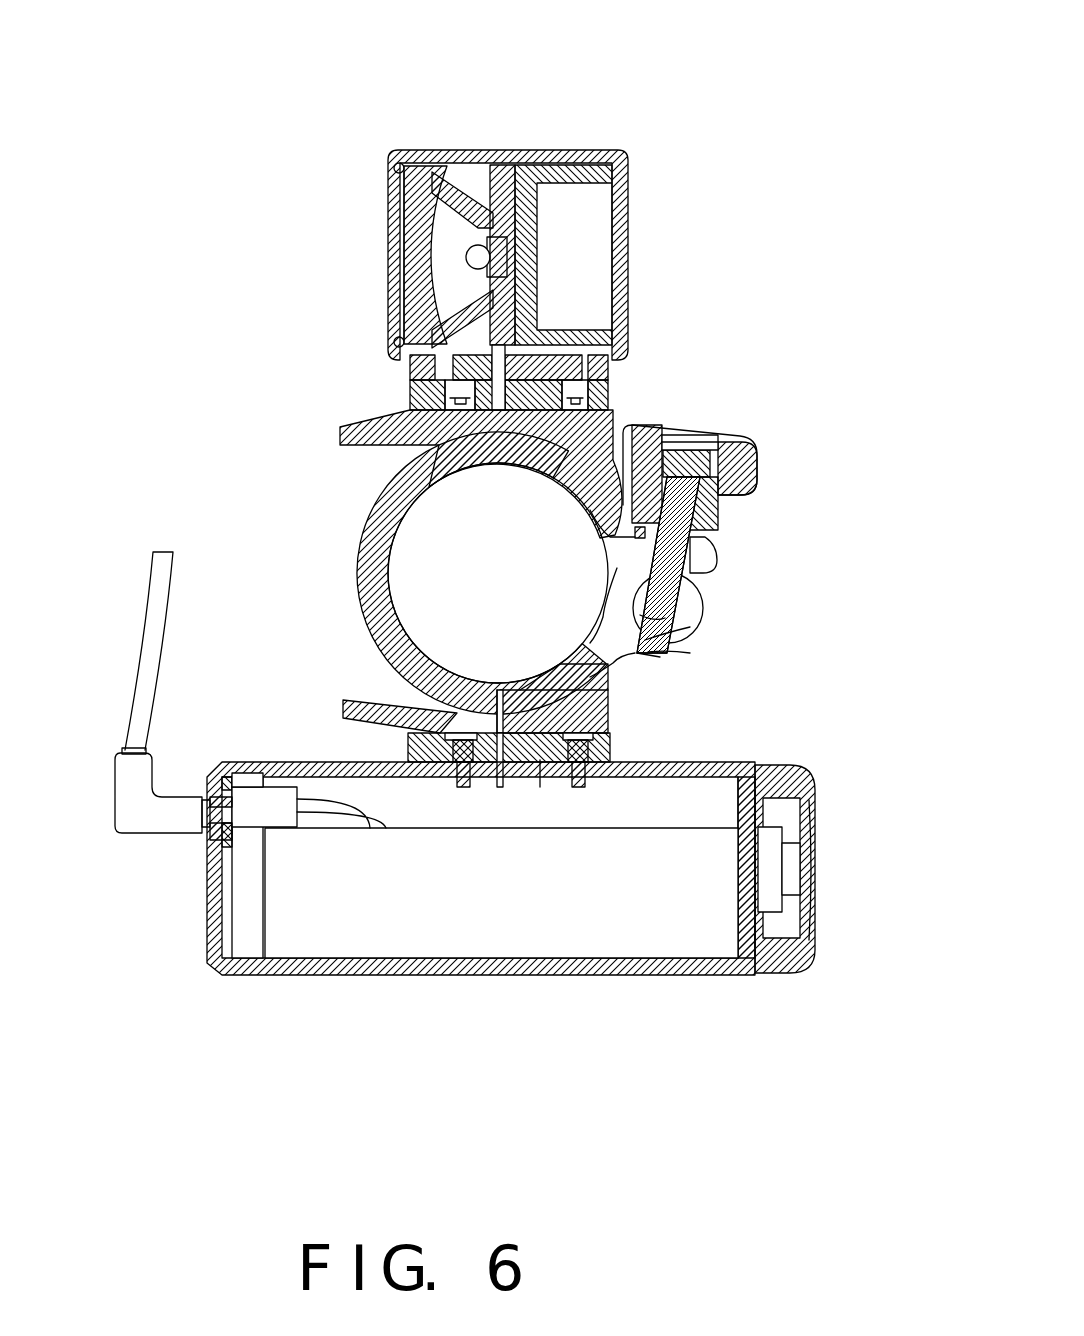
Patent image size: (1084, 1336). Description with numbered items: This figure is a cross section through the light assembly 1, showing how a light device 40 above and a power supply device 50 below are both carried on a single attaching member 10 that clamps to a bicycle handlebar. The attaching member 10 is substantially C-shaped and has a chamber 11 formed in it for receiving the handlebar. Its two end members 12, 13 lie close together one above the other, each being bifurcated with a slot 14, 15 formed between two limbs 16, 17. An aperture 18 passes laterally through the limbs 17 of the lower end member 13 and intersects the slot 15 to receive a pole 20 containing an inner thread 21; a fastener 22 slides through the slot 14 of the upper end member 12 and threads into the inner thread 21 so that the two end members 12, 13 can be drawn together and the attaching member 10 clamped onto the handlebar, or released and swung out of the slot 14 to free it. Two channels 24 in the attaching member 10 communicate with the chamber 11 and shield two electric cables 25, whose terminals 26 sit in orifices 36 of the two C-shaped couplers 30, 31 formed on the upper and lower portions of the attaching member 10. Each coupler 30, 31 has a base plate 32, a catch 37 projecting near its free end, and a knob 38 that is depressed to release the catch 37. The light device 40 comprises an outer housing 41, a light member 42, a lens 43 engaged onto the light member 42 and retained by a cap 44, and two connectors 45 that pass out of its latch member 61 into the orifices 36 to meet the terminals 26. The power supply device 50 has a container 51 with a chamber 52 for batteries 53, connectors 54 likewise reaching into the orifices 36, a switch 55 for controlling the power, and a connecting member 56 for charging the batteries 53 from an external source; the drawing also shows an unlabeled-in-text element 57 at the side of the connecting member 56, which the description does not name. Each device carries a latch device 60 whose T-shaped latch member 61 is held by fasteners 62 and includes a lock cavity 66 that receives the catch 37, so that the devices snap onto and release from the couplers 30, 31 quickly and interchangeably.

The light assembly 1 is at (743, 82).
The attaching member 10 is at (352, 541).
The chamber 11 is at (425, 618).
The end member 12 is at (725, 525).
The end member 13 is at (690, 666).
The slot 14 is at (703, 562).
The slot 15 is at (683, 594).
The limbs 16 is at (730, 547).
The limbs 17 is at (697, 613).
The aperture 18 is at (690, 627).
The pole 20 is at (690, 653).
The inner thread 21 is at (660, 657).
The fastener 22 is at (718, 440).
The channels 24 is at (340, 590).
The electric cables 25 is at (385, 503).
The terminals 26 is at (614, 405).
The coupler 30 is at (612, 428).
The coupler 31 is at (620, 730).
The base plate 32 is at (590, 683).
The orifices 36 is at (498, 755).
The catch 37 is at (420, 345).
The knob 38 is at (345, 710).
The light device 40 is at (492, 181).
The housing 41 is at (593, 152).
The light member 42 is at (477, 245).
The lens 43 is at (417, 193).
The cap 44 is at (398, 158).
The connectors 45 is at (462, 392).
The power supply device 50 is at (534, 918).
The container 51 is at (697, 985).
The chamber 52 is at (388, 958).
The batteries 53 is at (650, 935).
The connectors 54 is at (560, 723).
The switch 55 is at (770, 867).
The connecting member 56 is at (210, 797).
The power plug 57 is at (152, 818).
The latch device 60 is at (395, 392).
The latch member 61 is at (548, 925).
The fasteners 62 is at (578, 358).
The lock cavity 66 is at (418, 720).